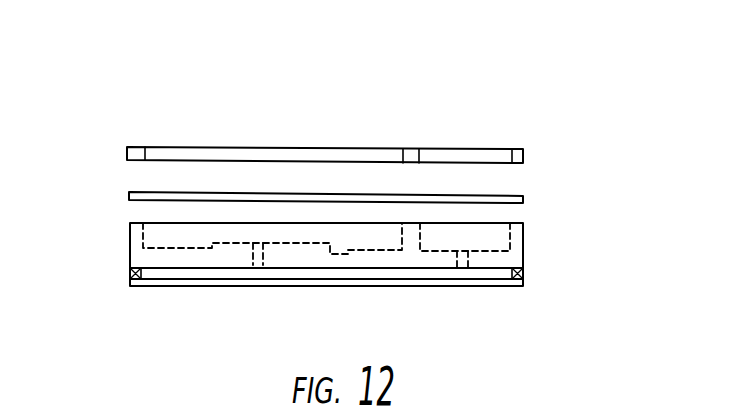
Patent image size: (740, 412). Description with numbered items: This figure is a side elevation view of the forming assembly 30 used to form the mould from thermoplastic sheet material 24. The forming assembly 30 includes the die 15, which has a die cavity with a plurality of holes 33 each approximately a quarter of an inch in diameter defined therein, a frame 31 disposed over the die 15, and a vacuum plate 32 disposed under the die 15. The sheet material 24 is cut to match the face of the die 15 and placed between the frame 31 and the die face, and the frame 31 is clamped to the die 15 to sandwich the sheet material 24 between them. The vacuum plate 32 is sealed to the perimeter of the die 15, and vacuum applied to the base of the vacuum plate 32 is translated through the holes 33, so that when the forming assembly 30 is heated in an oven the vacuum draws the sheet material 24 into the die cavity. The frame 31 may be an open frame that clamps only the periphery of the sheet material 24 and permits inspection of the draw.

The forming assembly 30 is at (457, 91).
The frame 31 is at (182, 147).
The thermoplastic sheet material 24 is at (525, 198).
The die 15 is at (138, 258).
The vacuum plate 32 is at (327, 282).
The holes 33 is at (262, 262).